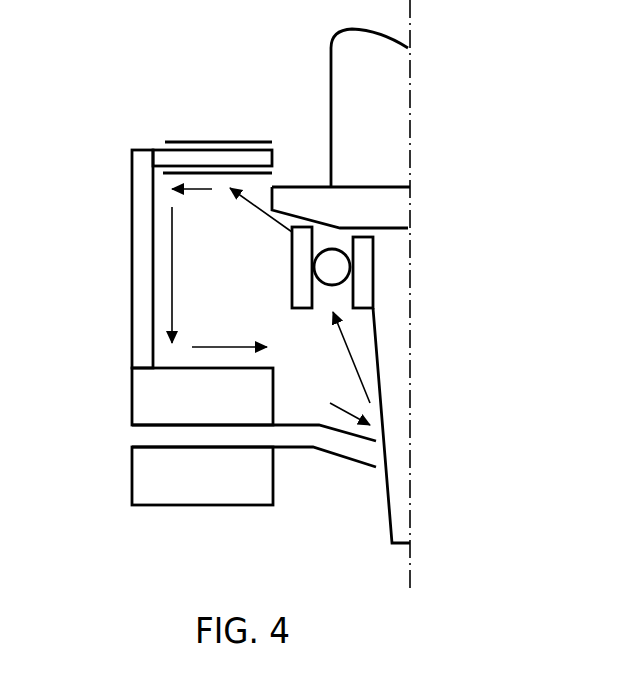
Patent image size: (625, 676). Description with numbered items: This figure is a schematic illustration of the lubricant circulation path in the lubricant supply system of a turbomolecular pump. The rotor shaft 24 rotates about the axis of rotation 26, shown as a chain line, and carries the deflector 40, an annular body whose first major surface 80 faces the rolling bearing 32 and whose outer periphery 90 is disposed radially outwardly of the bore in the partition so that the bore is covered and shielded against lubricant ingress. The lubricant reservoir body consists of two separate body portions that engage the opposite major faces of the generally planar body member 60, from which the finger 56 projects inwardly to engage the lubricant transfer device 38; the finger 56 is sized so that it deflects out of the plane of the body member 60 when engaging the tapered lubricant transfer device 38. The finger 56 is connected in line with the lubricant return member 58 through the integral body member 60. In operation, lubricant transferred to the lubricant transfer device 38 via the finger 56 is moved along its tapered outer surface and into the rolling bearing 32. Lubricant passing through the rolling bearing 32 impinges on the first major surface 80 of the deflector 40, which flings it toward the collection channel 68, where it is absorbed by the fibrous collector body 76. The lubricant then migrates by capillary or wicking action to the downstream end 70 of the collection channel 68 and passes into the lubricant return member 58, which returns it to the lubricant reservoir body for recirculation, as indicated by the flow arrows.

The rotor shaft 24 is at (398, 83).
The axis of rotation 26 is at (413, 563).
The rolling bearing 32 is at (388, 270).
The lubricant transfer device 38 is at (390, 522).
The deflector 40 is at (402, 203).
The finger 56 is at (338, 455).
The lubricant return member 58 is at (132, 258).
The body member 60 is at (143, 437).
The collection channel 68 is at (240, 141).
The downstream end 70 is at (167, 142).
The collector body 76 is at (213, 148).
The first major surface 80 is at (347, 204).
The outer periphery 90 is at (272, 184).